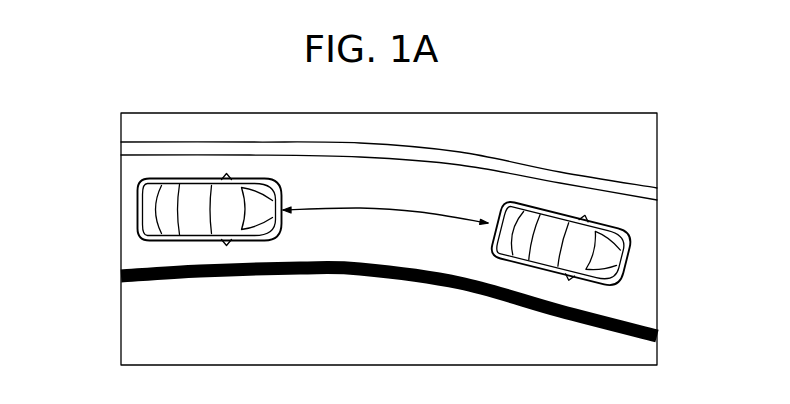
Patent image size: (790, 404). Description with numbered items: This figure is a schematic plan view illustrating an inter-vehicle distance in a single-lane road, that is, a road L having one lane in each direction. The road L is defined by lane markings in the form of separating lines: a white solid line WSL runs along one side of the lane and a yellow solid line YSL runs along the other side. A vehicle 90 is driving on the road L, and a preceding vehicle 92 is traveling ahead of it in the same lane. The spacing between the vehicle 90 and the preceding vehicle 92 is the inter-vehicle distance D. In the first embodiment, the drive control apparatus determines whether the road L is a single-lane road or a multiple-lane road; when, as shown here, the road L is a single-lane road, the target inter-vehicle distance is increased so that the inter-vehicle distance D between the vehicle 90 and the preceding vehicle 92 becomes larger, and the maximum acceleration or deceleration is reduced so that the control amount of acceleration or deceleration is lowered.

The white solid line WSL is at (121, 143).
The yellow solid line YSL is at (120, 276).
The vehicle 90 is at (272, 184).
The preceding vehicle 92 is at (503, 204).
The inter-vehicle distance D is at (385, 206).
The road L is at (640, 292).